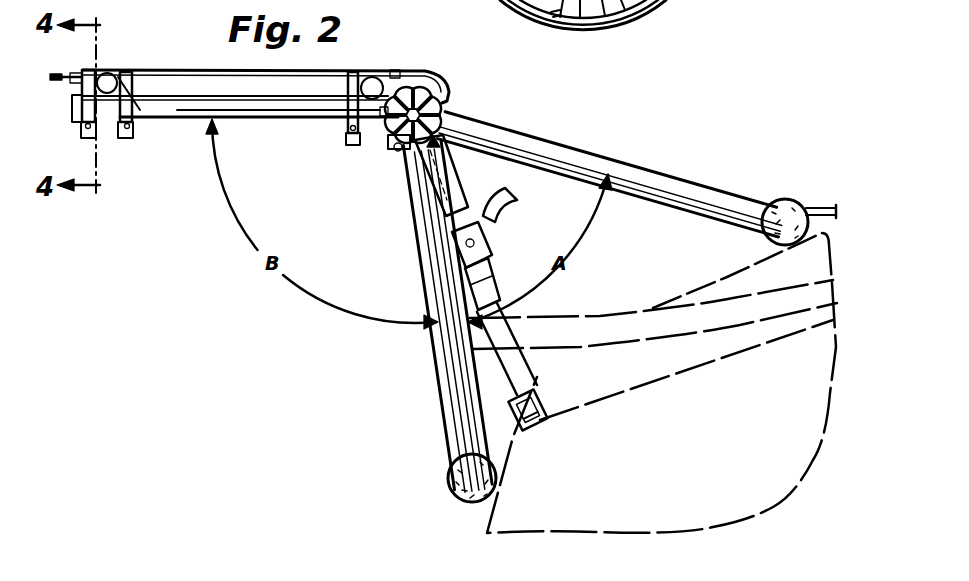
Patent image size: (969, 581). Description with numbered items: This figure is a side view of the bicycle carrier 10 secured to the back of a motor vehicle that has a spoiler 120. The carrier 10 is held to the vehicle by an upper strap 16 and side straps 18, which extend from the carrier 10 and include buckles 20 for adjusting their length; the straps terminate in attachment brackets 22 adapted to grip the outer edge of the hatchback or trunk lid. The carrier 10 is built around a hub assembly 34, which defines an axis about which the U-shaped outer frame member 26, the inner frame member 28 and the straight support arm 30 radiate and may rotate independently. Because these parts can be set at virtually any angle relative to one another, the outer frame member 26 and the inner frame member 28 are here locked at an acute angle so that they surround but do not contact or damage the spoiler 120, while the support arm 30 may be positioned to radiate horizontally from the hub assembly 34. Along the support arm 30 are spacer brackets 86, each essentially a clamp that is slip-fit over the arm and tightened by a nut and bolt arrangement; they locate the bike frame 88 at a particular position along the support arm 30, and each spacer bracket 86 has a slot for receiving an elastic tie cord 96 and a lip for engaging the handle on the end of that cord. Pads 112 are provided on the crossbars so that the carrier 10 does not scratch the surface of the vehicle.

The carrier 10 is at (636, 157).
The upper strap 16 is at (827, 205).
The side straps 18 is at (457, 192).
The buckles 20 is at (493, 255).
The attachment brackets 22 is at (548, 434).
The outer frame member 26 is at (648, 162).
The inner frame member 28 is at (430, 365).
The support arm 30 is at (173, 97).
The hub assembly 34 is at (448, 103).
The spacer bracket 86 is at (95, 68).
The bike frame 88 is at (145, 128).
The elastic tie cord 96 is at (327, 70).
The pads 112 is at (780, 197).
The spoiler 120 is at (560, 310).